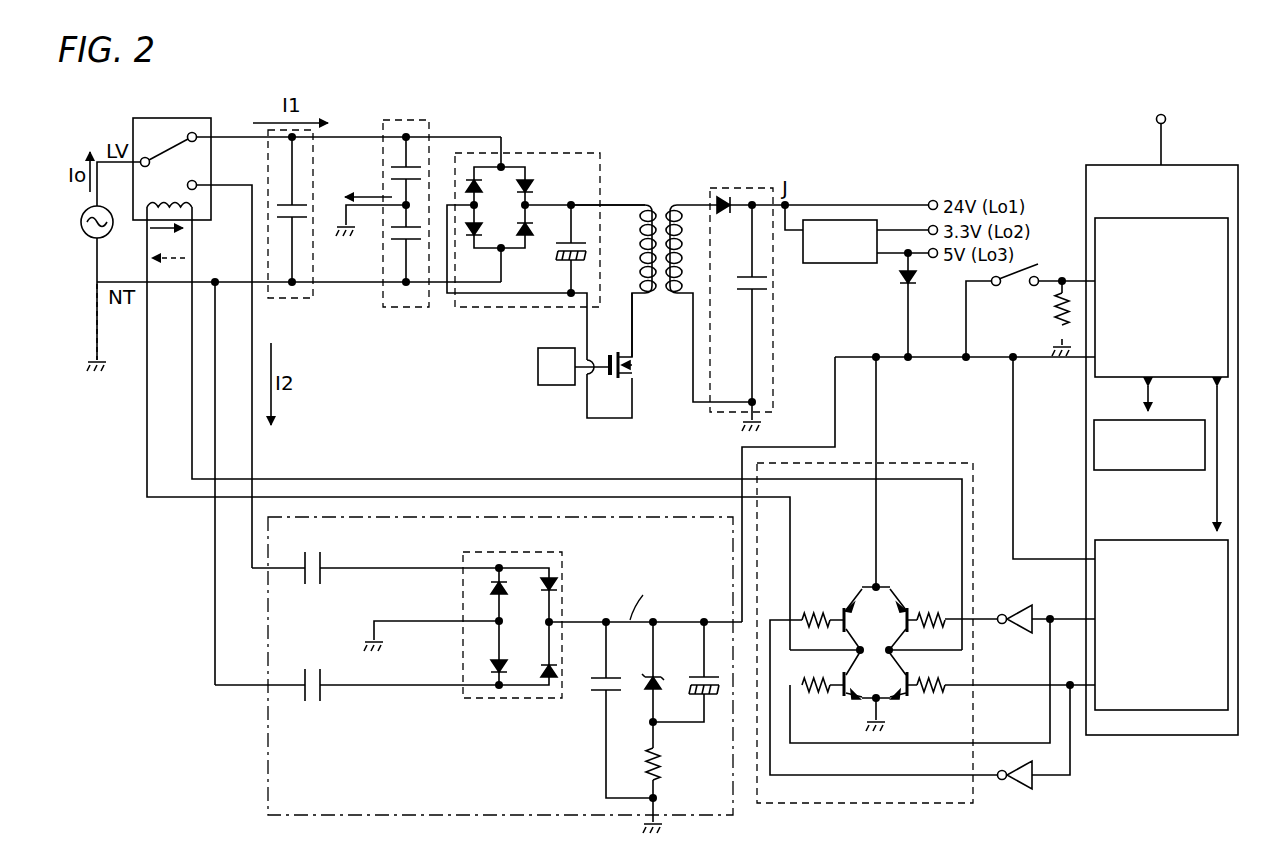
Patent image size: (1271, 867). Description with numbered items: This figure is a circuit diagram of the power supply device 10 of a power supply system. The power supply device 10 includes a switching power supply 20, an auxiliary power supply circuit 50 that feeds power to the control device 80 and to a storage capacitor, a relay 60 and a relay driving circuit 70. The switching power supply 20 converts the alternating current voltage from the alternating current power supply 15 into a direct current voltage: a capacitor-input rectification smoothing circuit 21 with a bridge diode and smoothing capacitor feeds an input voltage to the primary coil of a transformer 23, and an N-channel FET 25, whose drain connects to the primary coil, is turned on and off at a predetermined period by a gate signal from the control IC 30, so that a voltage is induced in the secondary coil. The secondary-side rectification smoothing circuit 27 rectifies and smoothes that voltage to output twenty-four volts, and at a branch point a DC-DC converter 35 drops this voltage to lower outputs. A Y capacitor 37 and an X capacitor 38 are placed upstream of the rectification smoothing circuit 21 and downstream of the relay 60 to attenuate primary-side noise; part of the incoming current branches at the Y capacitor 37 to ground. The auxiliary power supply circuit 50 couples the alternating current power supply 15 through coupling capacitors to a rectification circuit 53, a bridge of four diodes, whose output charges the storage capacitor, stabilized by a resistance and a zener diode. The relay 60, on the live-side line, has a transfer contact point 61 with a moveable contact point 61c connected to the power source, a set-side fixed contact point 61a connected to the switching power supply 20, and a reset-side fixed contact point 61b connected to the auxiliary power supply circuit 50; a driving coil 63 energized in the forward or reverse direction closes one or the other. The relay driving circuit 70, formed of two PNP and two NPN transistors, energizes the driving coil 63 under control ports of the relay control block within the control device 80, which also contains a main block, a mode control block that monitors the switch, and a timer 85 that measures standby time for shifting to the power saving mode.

The power supply device 10 is at (448, 687).
The alternating current power supply 15 is at (86, 236).
The switching power supply 20 is at (752, 256).
The rectification smoothing circuit 21 is at (546, 199).
The transformer 23 is at (661, 242).
The FET 25 is at (647, 397).
The rectification smoothing circuit 27 is at (821, 276).
The control IC 30 is at (552, 374).
The DC-DC converter 35 is at (838, 219).
The Y capacitor 37 is at (405, 118).
The X capacitor 38 is at (310, 298).
The auxiliary power supply circuit 50 is at (478, 687).
The rectification circuit 53 is at (483, 610).
The relay 60 is at (172, 183).
The transfer contact point 61 is at (172, 137).
The fixed contact point of a set-side 61a is at (197, 139).
The fixed contact point of a reset-side 61b is at (197, 183).
The moveable contact point 61c is at (145, 157).
The driving coil 63 is at (192, 200).
The relay driving circuit 70 is at (877, 596).
The control device 80 is at (1142, 459).
The timer 85 is at (1117, 470).